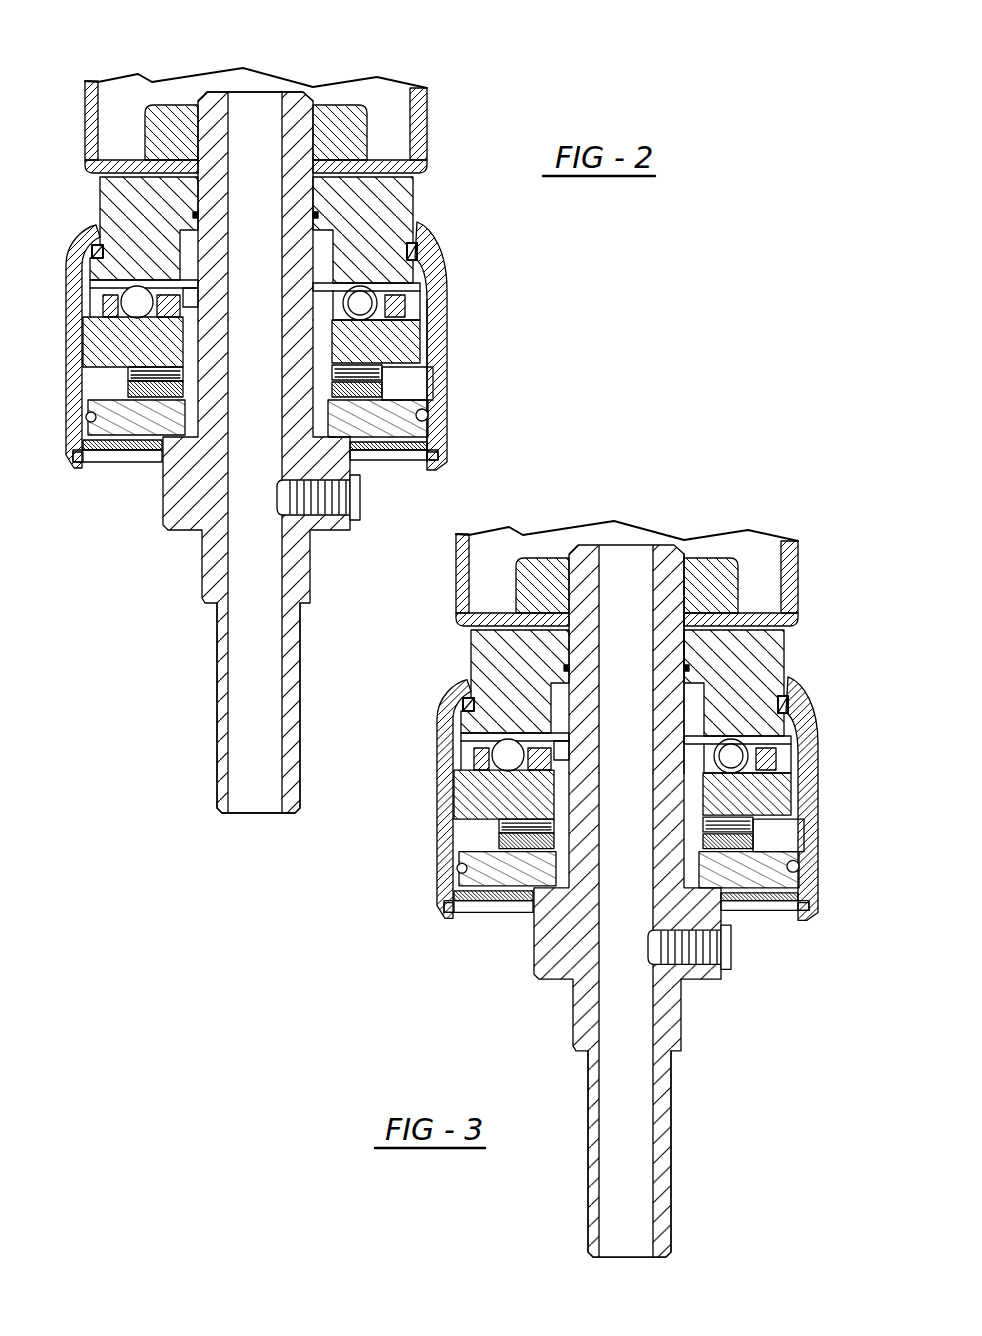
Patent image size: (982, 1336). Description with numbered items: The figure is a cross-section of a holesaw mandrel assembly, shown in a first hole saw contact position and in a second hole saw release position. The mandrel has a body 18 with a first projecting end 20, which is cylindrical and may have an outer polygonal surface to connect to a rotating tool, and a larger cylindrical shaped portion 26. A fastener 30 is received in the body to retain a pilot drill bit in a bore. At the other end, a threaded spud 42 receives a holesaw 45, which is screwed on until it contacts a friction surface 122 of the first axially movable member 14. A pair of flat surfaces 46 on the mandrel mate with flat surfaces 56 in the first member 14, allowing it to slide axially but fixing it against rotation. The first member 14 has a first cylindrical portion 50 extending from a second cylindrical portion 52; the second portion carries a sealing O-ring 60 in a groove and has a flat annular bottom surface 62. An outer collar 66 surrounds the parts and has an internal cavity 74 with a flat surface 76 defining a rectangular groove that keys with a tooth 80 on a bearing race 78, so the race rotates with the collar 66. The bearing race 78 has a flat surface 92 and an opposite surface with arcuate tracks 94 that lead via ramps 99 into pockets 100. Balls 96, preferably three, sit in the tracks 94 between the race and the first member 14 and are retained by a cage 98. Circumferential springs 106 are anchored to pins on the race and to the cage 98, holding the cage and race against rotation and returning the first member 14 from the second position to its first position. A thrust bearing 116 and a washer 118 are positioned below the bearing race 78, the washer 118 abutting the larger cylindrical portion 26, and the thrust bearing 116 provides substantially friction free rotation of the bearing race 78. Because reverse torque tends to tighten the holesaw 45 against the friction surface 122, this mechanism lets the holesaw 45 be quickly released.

In FIG. 2, the first axially movable member 14 is at (392, 200).
In FIG. 3, the first axially movable member 14 is at (775, 645).
In FIG. 2, the body 18 is at (325, 610).
In FIG. 3, the body 18 is at (713, 1014).
In FIG. 2, the first projecting end 20 is at (300, 692).
In FIG. 3, the first projecting end 20 is at (665, 1108).
In FIG. 2, the larger cylindrical shaped portion 26 is at (400, 423).
In FIG. 2, the fastener 30 is at (357, 506).
In FIG. 3, the fastener 30 is at (732, 943).
In FIG. 2, the threaded spud 42 is at (303, 103).
In FIG. 2, the holesaw 45 is at (85, 95).
In FIG. 3, the holesaw 45 is at (800, 565).
In FIG. 3, the flat surfaces 46 is at (682, 664).
In FIG. 2, the first cylindrical portion 50 is at (100, 190).
In FIG. 3, the first cylindrical portion 50 is at (790, 655).
In FIG. 2, the second cylindrical portion 52 is at (97, 235).
In FIG. 3, the second cylindrical portion 52 is at (790, 700).
In FIG. 3, the flat surfaces 56 is at (690, 650).
In FIG. 2, the sealing O-ring 60 is at (412, 285).
In FIG. 2, the flat annular bottom surface 62 is at (420, 283).
In FIG. 2, the collar 66 is at (446, 282).
In FIG. 2, the cavity 74 is at (85, 315).
In FIG. 3, the cavity 74 is at (455, 770).
In FIG. 2, the flat surface 76 is at (84, 350).
In FIG. 2, the bearing race 78 is at (88, 423).
In FIG. 3, the bearing race 78 is at (455, 853).
In FIG. 2, the tooth 80 is at (120, 353).
In FIG. 3, the tooth 80 is at (455, 800).
In FIG. 2, the surface 92 is at (415, 372).
In FIG. 2, the arcuate tracks 94 is at (105, 298).
In FIG. 2, the balls 96 is at (137, 300).
In FIG. 3, the balls 96 is at (507, 753).
In FIG. 2, the cage 98 is at (400, 308).
In FIG. 3, the cage 98 is at (780, 752).
In FIG. 3, the ramps 99 is at (485, 773).
In FIG. 3, the pockets 100 is at (480, 770).
In FIG. 2, the circumferential springs 106 is at (420, 297).
In FIG. 2, the thrust bearing 116 is at (385, 373).
In FIG. 2, the washer 118 is at (357, 395).
In FIG. 2, the friction surface 122 is at (105, 167).
In FIG. 3, the friction surface 122 is at (478, 622).